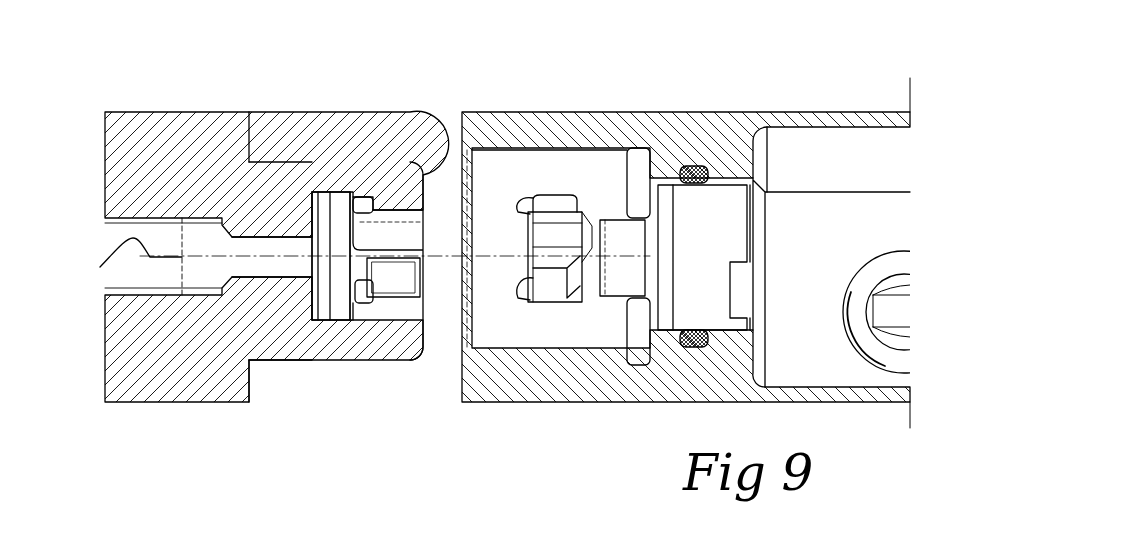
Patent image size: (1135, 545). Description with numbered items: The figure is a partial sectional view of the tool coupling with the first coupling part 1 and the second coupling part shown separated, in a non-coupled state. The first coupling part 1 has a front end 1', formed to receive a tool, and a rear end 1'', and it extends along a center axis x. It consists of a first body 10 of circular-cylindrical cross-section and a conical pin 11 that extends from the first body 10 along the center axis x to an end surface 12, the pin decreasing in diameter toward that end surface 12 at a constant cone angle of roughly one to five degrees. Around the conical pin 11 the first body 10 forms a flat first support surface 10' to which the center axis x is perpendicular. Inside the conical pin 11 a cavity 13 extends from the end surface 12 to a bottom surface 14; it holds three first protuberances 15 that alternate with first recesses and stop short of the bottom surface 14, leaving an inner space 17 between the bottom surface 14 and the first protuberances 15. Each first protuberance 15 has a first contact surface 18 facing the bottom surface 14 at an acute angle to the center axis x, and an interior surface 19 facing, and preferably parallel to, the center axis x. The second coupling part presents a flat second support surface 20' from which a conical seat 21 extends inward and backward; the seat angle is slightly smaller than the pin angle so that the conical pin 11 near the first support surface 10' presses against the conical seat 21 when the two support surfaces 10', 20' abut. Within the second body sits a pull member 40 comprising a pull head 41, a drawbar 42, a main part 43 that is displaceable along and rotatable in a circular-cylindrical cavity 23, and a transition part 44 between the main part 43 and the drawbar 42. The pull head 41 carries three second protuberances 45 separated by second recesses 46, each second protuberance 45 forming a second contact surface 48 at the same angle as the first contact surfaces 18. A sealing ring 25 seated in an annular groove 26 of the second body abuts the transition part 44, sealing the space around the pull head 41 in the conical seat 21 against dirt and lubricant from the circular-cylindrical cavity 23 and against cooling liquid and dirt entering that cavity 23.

The first coupling part 1 is at (137, 454).
The front end 1' is at (100, 60).
The rear end 1'' is at (424, 110).
The first body 10 is at (277, 222).
The first support surface 10' is at (272, 94).
The conical pin 11 is at (290, 172).
The end surface 12 is at (428, 342).
The cavity 13 is at (346, 236).
The bottom surface 14 is at (318, 300).
The first protuberances 15 is at (398, 215).
The inner space 17 is at (337, 312).
The first contact surface 18 is at (363, 202).
The interior surface 19 is at (408, 288).
The second support surface 20' is at (678, 231).
The conical seat 21 is at (530, 150).
The circular-cylindrical cavity 23 is at (832, 395).
The sealing ring 25 is at (690, 348).
The annular groove 26 is at (690, 167).
The pull member 40 is at (818, 118).
The pull head 41 is at (630, 185).
The drawbar 42 is at (620, 296).
The main part 43 is at (862, 165).
The transition part 44 is at (725, 225).
The second protuberances 45 is at (527, 208).
The second recess 46 is at (540, 250).
The second contact surface 48 is at (580, 207).
The center axis x is at (100, 267).